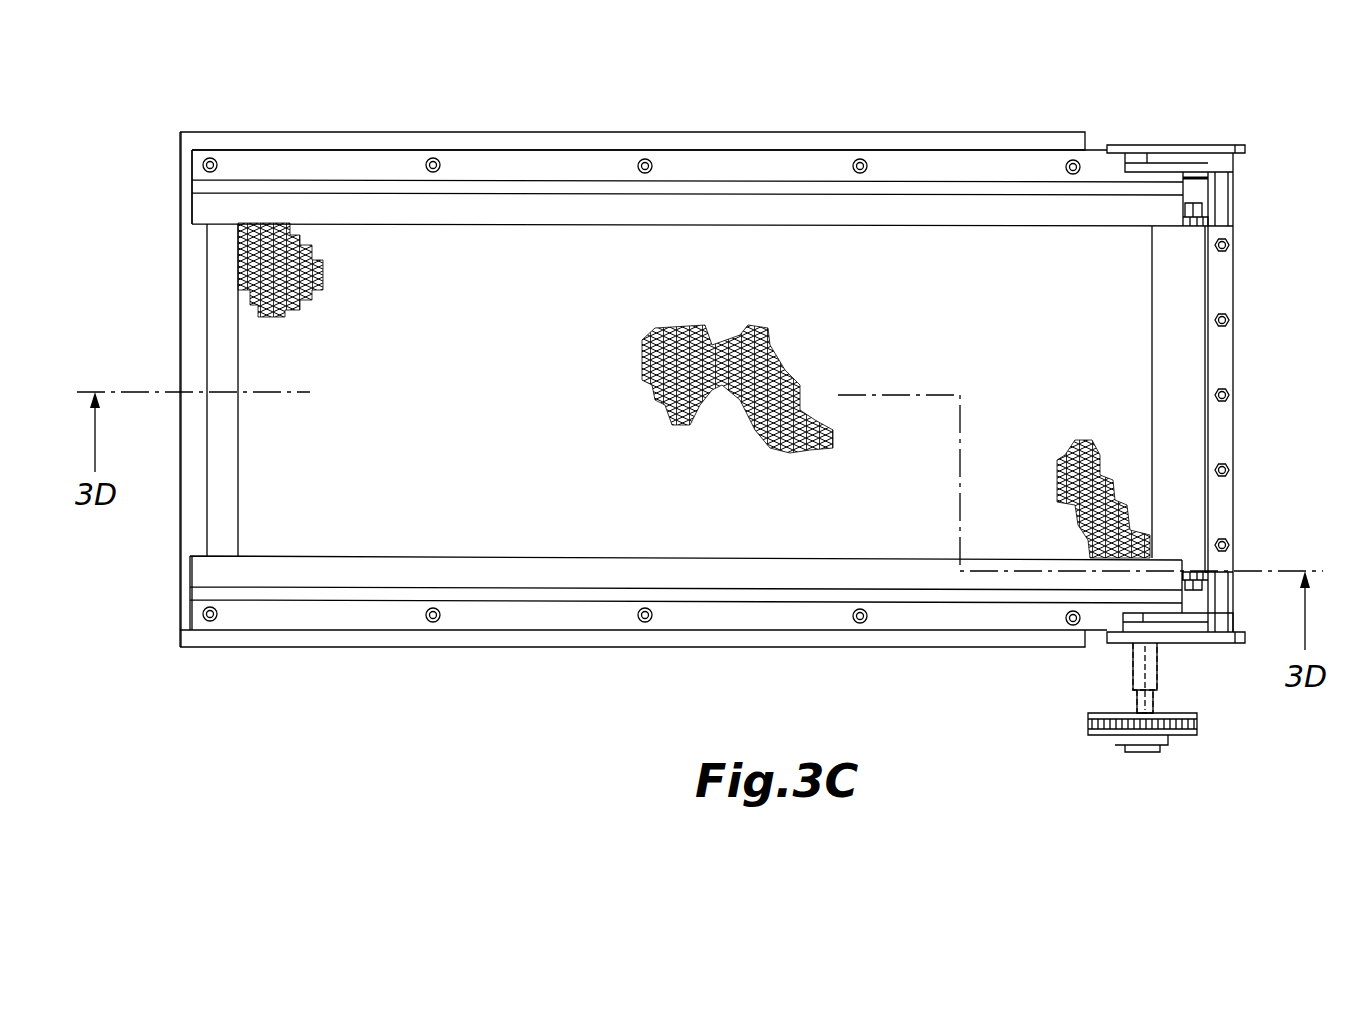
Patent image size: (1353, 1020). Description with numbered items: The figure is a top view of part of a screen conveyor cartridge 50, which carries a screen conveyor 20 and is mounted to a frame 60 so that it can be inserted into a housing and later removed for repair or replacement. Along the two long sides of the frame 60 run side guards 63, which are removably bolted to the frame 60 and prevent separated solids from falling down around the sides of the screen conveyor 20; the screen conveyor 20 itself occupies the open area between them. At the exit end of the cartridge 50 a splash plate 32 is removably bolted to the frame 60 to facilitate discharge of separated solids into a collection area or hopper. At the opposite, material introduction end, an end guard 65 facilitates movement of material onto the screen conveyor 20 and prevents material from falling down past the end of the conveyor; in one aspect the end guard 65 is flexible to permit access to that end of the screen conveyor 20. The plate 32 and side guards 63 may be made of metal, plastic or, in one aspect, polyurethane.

The screen conveyor 20 is at (763, 380).
The splash plate 32 is at (1183, 360).
The cartridge 50 is at (346, 128).
The frame 60 is at (180, 210).
The side guards 63 is at (752, 212).
The end guard 65 is at (222, 515).